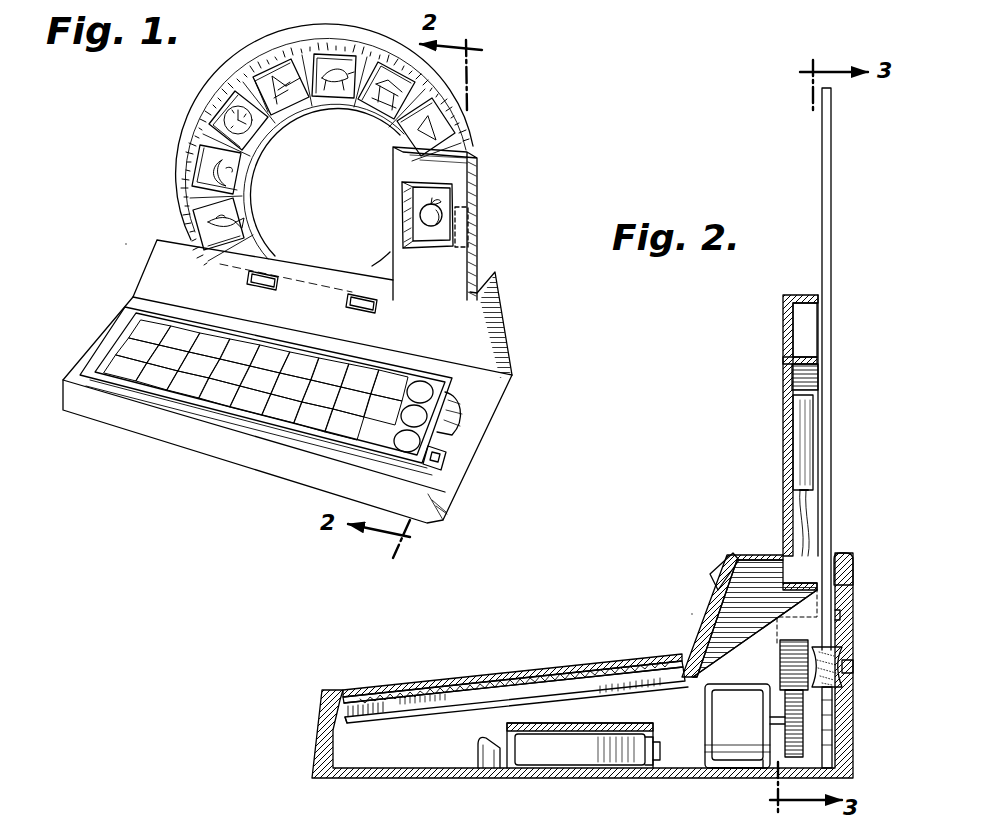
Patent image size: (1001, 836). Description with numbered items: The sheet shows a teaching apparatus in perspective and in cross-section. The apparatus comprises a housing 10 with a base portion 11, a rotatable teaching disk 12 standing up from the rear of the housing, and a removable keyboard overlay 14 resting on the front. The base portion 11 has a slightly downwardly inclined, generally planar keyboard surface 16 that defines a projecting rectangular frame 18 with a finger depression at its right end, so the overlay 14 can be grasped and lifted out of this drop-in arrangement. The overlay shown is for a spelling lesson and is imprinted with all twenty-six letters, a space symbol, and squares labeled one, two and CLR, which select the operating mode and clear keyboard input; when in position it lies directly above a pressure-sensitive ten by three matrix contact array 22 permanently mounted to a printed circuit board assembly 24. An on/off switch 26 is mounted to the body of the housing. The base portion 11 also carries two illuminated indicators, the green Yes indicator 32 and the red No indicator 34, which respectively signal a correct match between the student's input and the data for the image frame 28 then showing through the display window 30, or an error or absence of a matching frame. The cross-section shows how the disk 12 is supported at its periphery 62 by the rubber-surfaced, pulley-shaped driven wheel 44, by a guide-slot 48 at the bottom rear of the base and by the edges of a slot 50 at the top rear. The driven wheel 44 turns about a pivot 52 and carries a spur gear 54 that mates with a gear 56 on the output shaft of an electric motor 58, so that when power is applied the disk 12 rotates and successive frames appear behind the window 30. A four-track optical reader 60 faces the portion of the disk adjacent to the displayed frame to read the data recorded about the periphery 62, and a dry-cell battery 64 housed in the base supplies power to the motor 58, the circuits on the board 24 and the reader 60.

In FIG. 1, the housing 10 is at (126, 244).
In FIG. 2, the housing 10 is at (692, 614).
In FIG. 1, the base portion 11 is at (497, 360).
In FIG. 2, the base portion 11 is at (318, 740).
In FIG. 1, the teaching disk 12 is at (264, 44).
In FIG. 2, the teaching disk 12 is at (833, 197).
In FIG. 1, the keyboard overlay 14 is at (278, 428).
In FIG. 1, the keyboard surface 16 is at (463, 392).
In FIG. 1, the rectangular frame 18 is at (418, 462).
In FIG. 2, the rectangular frame 18 is at (366, 690).
In FIG. 2, the contact array 22 is at (410, 705).
In FIG. 2, the printed circuit board assembly 24 is at (604, 688).
In FIG. 1, the on/off switch 26 is at (452, 456).
In FIG. 1, the frame 28 is at (418, 198).
In FIG. 1, the display window 30 is at (420, 183).
In FIG. 2, the display window 30 is at (790, 374).
In FIG. 1, the Yes indicator 32 is at (248, 279).
In FIG. 1, the No indicator 34 is at (363, 313).
In FIG. 2, the No indicator 34 is at (716, 568).
In FIG. 2, the driven wheel 44 is at (832, 652).
In FIG. 2, the guide-slot 48 is at (840, 770).
In FIG. 2, the slot 50 is at (834, 553).
In FIG. 2, the pivot 52 is at (845, 668).
In FIG. 2, the spur gear 54 is at (812, 642).
In FIG. 2, the gear 56 is at (806, 704).
In FIG. 2, the electric motor 58 is at (745, 726).
In FIG. 1, the four-track optical reader 60 is at (470, 232).
In FIG. 2, the four-track optical reader 60 is at (800, 455).
In FIG. 1, the periphery 62 is at (188, 126).
In FIG. 2, the dry-cell battery 64 is at (595, 755).